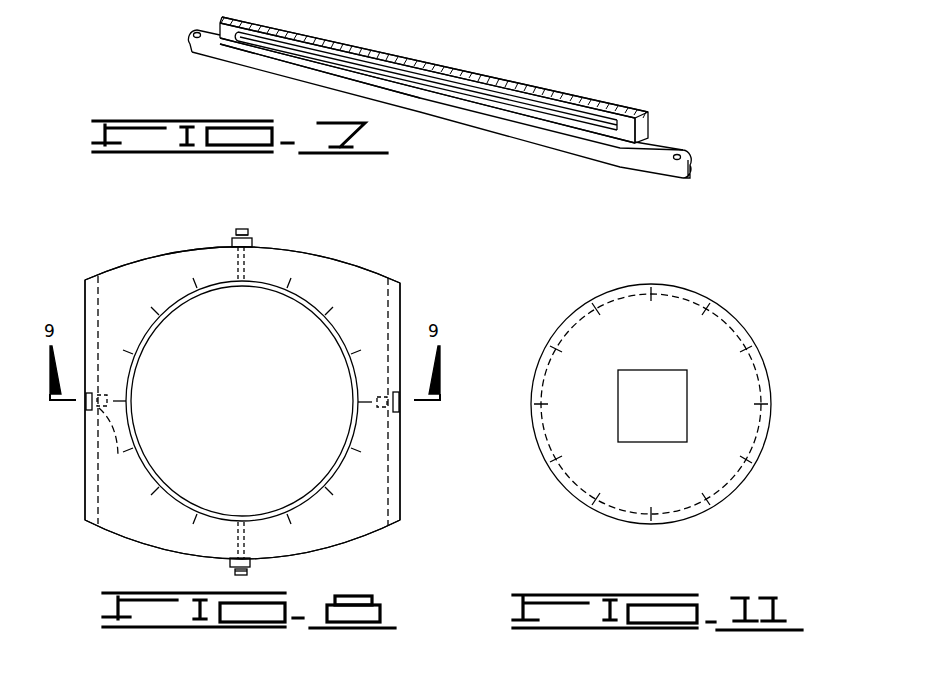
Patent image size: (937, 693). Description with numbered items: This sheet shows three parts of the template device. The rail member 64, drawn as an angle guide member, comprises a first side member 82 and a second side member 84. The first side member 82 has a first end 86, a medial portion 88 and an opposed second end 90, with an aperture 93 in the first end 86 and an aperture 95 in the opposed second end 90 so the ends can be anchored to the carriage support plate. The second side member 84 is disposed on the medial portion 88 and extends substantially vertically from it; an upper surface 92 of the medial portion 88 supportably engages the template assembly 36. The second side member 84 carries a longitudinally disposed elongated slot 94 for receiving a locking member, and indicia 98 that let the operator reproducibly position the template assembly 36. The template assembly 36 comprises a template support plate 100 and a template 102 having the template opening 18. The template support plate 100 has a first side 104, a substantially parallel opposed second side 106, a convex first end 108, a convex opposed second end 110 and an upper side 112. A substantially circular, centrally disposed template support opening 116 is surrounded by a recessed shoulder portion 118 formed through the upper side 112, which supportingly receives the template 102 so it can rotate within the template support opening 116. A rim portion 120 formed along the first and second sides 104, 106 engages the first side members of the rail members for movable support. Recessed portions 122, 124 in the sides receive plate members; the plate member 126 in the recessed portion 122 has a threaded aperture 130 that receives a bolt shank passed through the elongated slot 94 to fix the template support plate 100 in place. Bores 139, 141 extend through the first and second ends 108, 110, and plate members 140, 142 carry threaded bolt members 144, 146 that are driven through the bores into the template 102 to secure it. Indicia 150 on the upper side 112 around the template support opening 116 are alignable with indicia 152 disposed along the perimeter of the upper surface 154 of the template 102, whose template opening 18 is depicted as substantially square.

In FIG. 7, the rail member 64 is at (497, 69).
In FIG. 7, the first side member 82 is at (473, 113).
In FIG. 7, the second side member 84 is at (650, 122).
In FIG. 7, the first end 86 is at (196, 49).
In FIG. 7, the medial portion 88 is at (310, 77).
In FIG. 7, the opposed second end 90 is at (673, 168).
In FIG. 7, the upper surface 92 is at (575, 128).
In FIG. 7, the aperture 93 is at (191, 33).
In FIG. 7, the elongated slot 94 is at (627, 125).
In FIG. 7, the aperture 95 is at (682, 148).
In FIG. 7, the indicia 98 is at (593, 115).
In FIG. 8, the template assembly 36 is at (380, 271).
In FIG. 8, the template support plate 100 is at (342, 267).
In FIG. 8, the first side 104 is at (85, 280).
In FIG. 8, the opposed second side 106 is at (402, 295).
In FIG. 8, the first end 108 is at (112, 532).
In FIG. 8, the opposed second end 110 is at (152, 262).
In FIG. 8, the upper side 112 is at (368, 512).
In FIG. 8, the template support opening 116 is at (325, 457).
In FIG. 8, the recessed shoulder portion 118 is at (355, 412).
In FIG. 8, the rim portion 120 is at (388, 463).
In FIG. 8, the recessed portion 122 is at (86, 403).
In FIG. 8, the recessed portion 124 is at (402, 407).
In FIG. 8, the plate member 126 is at (97, 393).
In FIG. 8, the threaded aperture 130 is at (116, 444).
In FIG. 8, the bore 139 is at (246, 548).
In FIG. 8, the plate member 140 is at (252, 563).
In FIG. 8, the bore 141 is at (250, 258).
In FIG. 8, the plate member 142 is at (260, 246).
In FIG. 8, the threaded bolt member 144 is at (233, 574).
In FIG. 8, the threaded bolt member 146 is at (244, 229).
In FIG. 8, the indicia 150 is at (195, 280).
In FIG. 11, the template 102 is at (707, 318).
In FIG. 11, the indicia 152 is at (575, 323).
In FIG. 11, the template opening 18 is at (677, 397).
In FIG. 11, the upper surface 154 is at (665, 472).